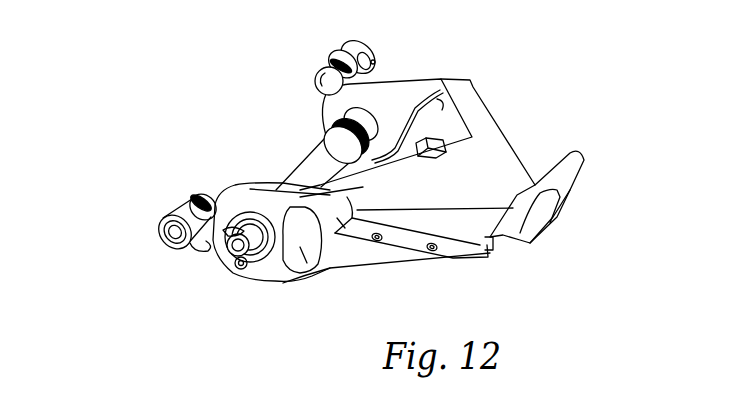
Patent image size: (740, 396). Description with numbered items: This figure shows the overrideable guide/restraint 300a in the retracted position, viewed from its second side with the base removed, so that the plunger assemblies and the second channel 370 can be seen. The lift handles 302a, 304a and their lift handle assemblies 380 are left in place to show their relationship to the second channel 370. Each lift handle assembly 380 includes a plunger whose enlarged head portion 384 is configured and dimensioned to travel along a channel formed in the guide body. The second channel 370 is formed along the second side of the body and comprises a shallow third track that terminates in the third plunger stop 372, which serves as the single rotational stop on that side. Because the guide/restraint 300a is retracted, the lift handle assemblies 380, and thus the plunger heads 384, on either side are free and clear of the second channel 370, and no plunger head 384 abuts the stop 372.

The overrideable guide/restraint 300a is at (477, 111).
The lift handle 302a is at (375, 52).
The lift handle 304a is at (157, 215).
The second channel 370 is at (291, 279).
The third plunger stop 372 is at (280, 193).
The lift handle assembly 380 is at (324, 45).
The head portion 384 is at (315, 82).